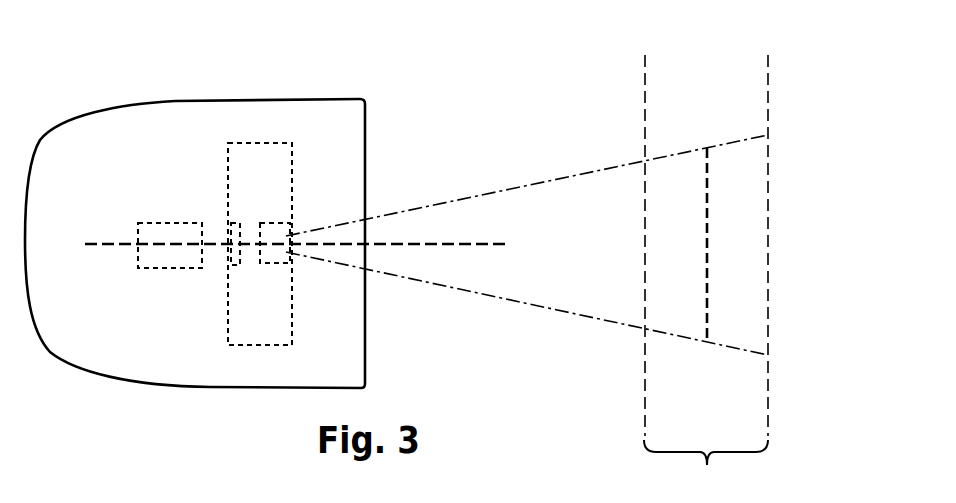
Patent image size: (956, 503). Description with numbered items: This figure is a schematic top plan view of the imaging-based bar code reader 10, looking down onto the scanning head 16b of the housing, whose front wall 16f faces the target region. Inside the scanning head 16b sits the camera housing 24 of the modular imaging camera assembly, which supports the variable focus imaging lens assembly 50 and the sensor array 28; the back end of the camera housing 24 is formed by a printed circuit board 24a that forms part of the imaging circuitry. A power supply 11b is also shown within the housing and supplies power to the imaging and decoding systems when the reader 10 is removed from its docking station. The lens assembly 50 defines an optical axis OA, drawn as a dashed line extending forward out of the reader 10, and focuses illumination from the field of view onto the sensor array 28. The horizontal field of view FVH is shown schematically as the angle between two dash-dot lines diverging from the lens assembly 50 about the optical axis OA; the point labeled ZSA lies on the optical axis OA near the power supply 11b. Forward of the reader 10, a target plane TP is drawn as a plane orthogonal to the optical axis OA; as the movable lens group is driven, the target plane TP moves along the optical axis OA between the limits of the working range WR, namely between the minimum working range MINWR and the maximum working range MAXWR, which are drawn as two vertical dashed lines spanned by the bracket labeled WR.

The bar code reader 10 is at (72, 91).
The scanning head portion 16b is at (171, 92).
The front wall of housing 16f is at (367, 150).
The camera housing 24 is at (268, 143).
The printed circuit board 24a is at (228, 316).
The power supply 11b is at (175, 243).
The sensor array 28 is at (232, 257).
The variable focus imaging lens assembly 50 is at (285, 285).
The zero sensing axis point ZSA is at (126, 247).
The optical axis OA is at (508, 246).
The horizontal field of view FVH is at (541, 198).
The minimum working range MINWR is at (646, 232).
The maximum working range MAXWR is at (776, 232).
The target plane TP is at (709, 170).
The working range WR is at (706, 466).